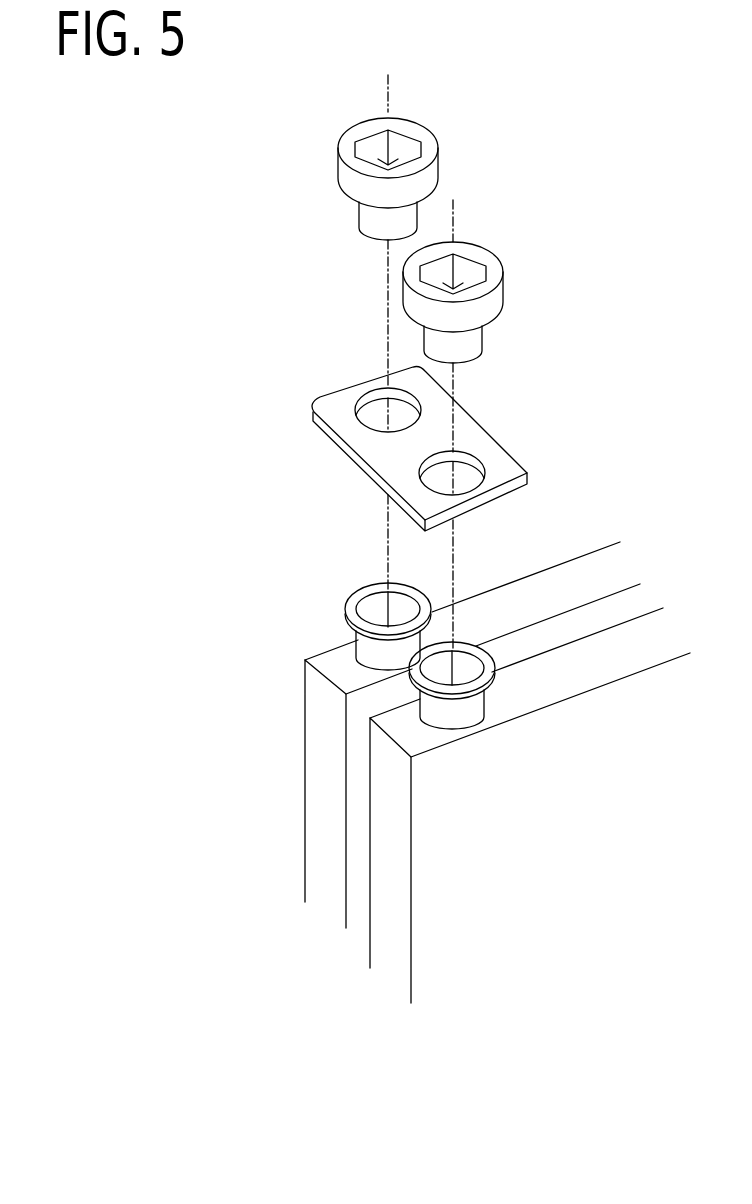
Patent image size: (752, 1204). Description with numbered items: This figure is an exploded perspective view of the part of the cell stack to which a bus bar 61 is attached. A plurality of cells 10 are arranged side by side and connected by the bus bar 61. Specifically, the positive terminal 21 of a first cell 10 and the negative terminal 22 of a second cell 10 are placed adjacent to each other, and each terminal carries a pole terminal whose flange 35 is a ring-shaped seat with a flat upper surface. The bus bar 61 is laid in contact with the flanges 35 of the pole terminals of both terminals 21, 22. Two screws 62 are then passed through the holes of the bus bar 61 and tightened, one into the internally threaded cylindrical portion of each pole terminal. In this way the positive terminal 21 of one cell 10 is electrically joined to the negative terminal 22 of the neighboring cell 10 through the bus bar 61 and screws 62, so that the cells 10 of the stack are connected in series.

The cell 10 is at (477, 799).
The positive terminal 21 is at (478, 704).
The negative terminal 22 is at (372, 653).
The flange 35 is at (355, 597).
The bus bar 61 is at (510, 471).
The screw 62 is at (433, 170).